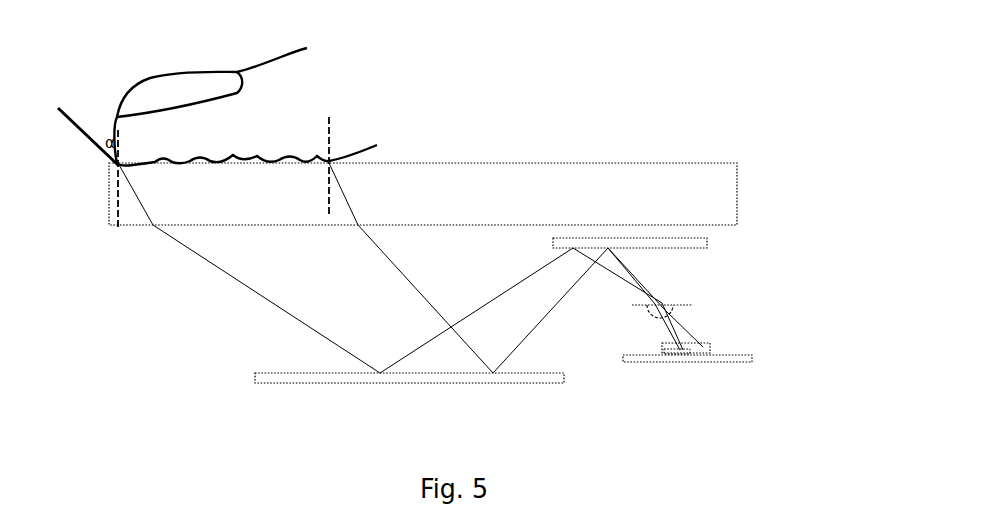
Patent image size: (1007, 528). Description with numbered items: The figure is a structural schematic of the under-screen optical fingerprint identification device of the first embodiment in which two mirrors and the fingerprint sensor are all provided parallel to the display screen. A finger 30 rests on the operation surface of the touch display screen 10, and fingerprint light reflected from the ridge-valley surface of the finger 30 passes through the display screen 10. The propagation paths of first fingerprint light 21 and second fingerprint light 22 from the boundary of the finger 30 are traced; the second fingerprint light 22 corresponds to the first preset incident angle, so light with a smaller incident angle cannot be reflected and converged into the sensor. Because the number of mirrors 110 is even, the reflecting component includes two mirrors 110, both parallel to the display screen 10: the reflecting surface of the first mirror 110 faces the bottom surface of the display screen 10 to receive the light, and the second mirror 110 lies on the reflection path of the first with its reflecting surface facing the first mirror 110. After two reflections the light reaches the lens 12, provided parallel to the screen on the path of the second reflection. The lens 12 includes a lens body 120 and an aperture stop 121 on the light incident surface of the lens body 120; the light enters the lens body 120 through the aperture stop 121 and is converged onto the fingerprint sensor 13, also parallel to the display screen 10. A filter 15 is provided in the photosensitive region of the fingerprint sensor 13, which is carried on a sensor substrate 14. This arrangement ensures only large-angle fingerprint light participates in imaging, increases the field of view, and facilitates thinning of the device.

The display screen 10 is at (662, 185).
The mirror 110 is at (667, 243).
The lens 12 is at (702, 294).
The aperture stop 121 is at (667, 303).
The lens body 120 is at (672, 309).
The fingerprint sensor 13 is at (673, 355).
The sensor substrate 14 is at (720, 361).
The filter 15 is at (707, 348).
The first fingerprint light 21 is at (288, 313).
The second fingerprint light 22 is at (407, 277).
The finger 30 is at (161, 147).